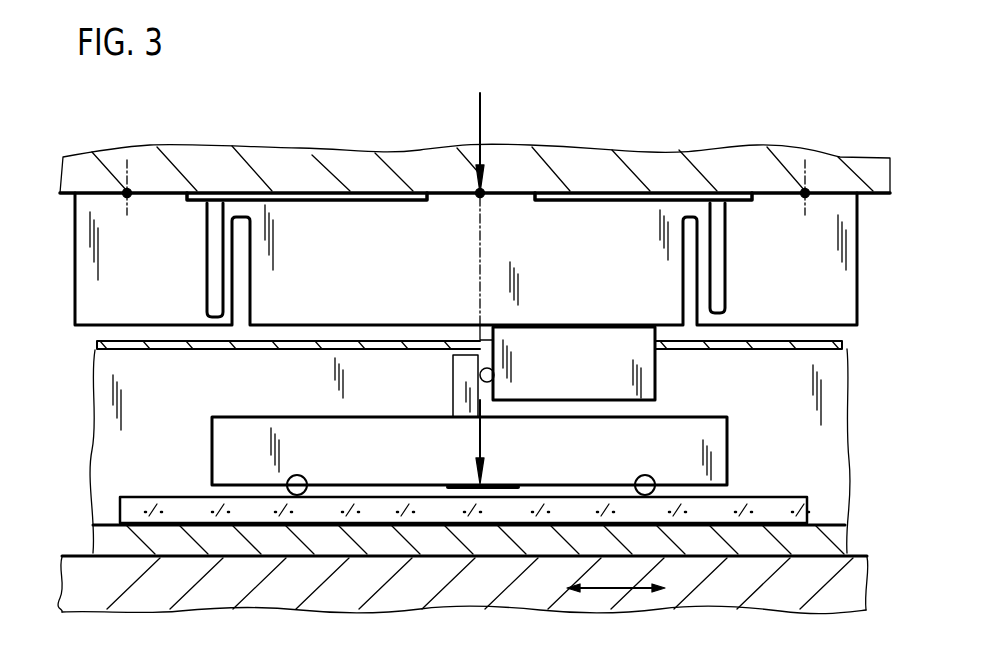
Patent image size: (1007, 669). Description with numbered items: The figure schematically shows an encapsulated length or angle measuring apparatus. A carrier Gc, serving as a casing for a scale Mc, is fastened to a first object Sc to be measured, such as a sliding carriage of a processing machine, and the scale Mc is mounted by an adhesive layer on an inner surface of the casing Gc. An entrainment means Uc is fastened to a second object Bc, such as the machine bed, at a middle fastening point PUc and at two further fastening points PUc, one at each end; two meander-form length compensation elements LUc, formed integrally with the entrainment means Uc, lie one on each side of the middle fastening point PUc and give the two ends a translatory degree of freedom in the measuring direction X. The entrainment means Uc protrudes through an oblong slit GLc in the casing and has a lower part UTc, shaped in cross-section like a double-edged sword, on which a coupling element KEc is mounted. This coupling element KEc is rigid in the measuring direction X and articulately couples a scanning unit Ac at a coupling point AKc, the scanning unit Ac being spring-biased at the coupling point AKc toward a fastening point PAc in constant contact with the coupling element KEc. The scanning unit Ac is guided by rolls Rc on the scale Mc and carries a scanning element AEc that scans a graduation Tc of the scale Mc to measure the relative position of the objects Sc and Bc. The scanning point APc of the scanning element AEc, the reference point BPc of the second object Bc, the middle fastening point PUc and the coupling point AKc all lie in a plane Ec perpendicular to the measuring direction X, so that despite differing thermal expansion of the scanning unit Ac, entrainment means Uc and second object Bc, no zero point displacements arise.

The second object to be measured Bc is at (357, 170).
The fastening point PUc is at (127, 192).
The meander-form length compensation element LUc is at (230, 233).
The plane Ec is at (478, 110).
The reference point BPc is at (482, 132).
The entrainment means Uc is at (857, 300).
The coupling element KEc is at (478, 336).
The oblong slit GLc is at (118, 348).
The coupling point AKc is at (477, 368).
The fastening point PAc is at (494, 375).
The lower part UTc is at (648, 373).
The scanning unit Ac is at (720, 447).
The roll Rc is at (293, 483).
The scanning point APc is at (477, 448).
The scanning element AEc is at (505, 483).
The graduation Tc is at (137, 497).
The carrier Gc is at (107, 543).
The scale Mc is at (267, 517).
The first object to be measured Sc is at (463, 587).
The measuring direction X is at (616, 577).